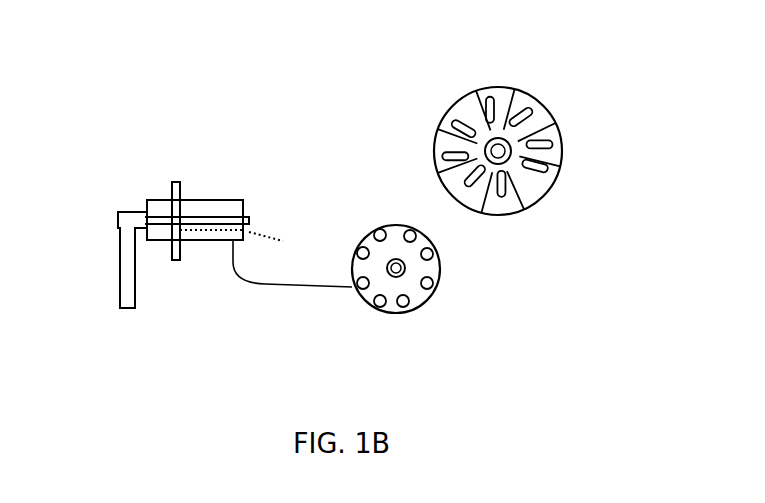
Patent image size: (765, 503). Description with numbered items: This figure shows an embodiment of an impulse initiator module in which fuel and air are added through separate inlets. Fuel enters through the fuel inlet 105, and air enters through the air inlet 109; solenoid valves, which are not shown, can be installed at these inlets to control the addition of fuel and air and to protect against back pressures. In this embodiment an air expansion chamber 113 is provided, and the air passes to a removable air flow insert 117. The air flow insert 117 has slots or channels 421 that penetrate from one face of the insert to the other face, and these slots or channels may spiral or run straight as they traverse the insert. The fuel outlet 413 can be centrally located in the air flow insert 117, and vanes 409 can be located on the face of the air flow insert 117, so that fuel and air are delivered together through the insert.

The fuel inlet 105 is at (125, 311).
The air inlet 109 is at (175, 270).
The air expansion chamber 113 is at (158, 204).
The removable air flow insert 117 is at (214, 208).
The vanes 409 is at (510, 108).
The fuel outlet 413 is at (394, 264).
The slots or channels 421 is at (403, 303).